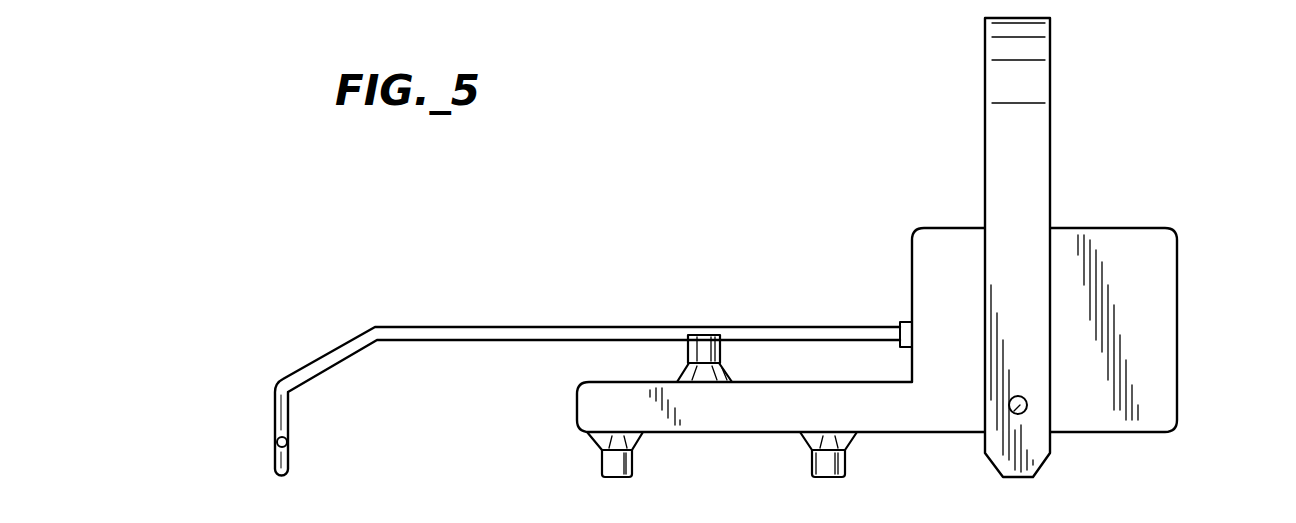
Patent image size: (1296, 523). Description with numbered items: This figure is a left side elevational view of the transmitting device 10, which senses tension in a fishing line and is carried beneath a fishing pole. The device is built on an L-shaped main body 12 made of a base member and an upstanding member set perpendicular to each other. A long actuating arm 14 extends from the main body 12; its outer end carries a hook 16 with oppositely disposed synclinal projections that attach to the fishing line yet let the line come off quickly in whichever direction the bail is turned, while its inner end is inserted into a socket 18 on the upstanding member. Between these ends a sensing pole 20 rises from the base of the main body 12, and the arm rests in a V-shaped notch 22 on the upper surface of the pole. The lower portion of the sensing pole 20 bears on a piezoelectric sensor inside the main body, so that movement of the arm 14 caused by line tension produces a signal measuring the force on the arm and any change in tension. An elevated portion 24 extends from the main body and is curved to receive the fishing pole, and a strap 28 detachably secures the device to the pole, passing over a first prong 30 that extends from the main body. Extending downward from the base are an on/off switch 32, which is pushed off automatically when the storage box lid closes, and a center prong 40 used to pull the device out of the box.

The transmitting device 10 is at (1190, 277).
The main body 12 is at (577, 406).
The actuating arm 14 is at (520, 326).
The hook 16 is at (290, 441).
The socket 18 is at (900, 324).
The sensing pole 20 is at (727, 378).
The V-shaped notch 22 is at (704, 335).
The elevated portion 24 is at (1113, 228).
The strap 28 is at (1052, 135).
The first prong 30 is at (1028, 406).
The on/off switch 32 is at (634, 463).
The center prong 40 is at (850, 463).